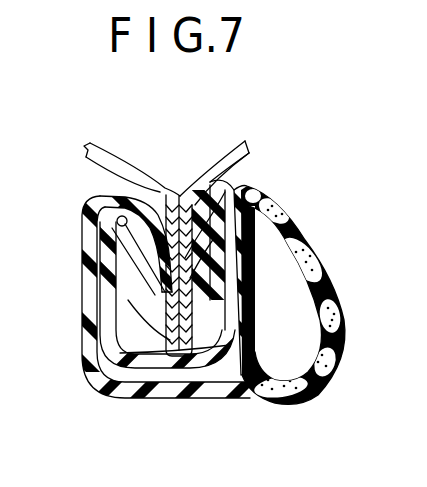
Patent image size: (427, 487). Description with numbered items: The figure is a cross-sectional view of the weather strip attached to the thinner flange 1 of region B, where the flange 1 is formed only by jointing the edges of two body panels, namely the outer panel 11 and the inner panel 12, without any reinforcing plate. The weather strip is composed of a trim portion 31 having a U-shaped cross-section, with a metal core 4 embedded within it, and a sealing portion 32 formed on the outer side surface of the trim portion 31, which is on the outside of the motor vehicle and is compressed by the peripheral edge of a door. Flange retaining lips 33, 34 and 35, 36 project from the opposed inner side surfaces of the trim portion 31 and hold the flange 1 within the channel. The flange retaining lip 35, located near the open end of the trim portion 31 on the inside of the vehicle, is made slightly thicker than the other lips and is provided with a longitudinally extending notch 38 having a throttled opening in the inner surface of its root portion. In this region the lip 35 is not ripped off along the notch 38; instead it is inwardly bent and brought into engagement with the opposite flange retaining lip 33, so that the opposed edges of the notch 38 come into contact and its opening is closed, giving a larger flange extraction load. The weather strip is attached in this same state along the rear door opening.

The flange 1 is at (181, 398).
The metal core 4 is at (84, 318).
The outer panel 11 is at (110, 168).
The inner panel 12 is at (215, 165).
The trim portion 31 is at (150, 400).
The sealing portion 32 is at (292, 400).
The flange retaining lip 33 is at (268, 197).
The flange retaining lip 34 is at (230, 386).
The flange retaining lip 35 is at (112, 288).
The flange retaining lip 36 is at (93, 362).
The notch 38 is at (88, 205).